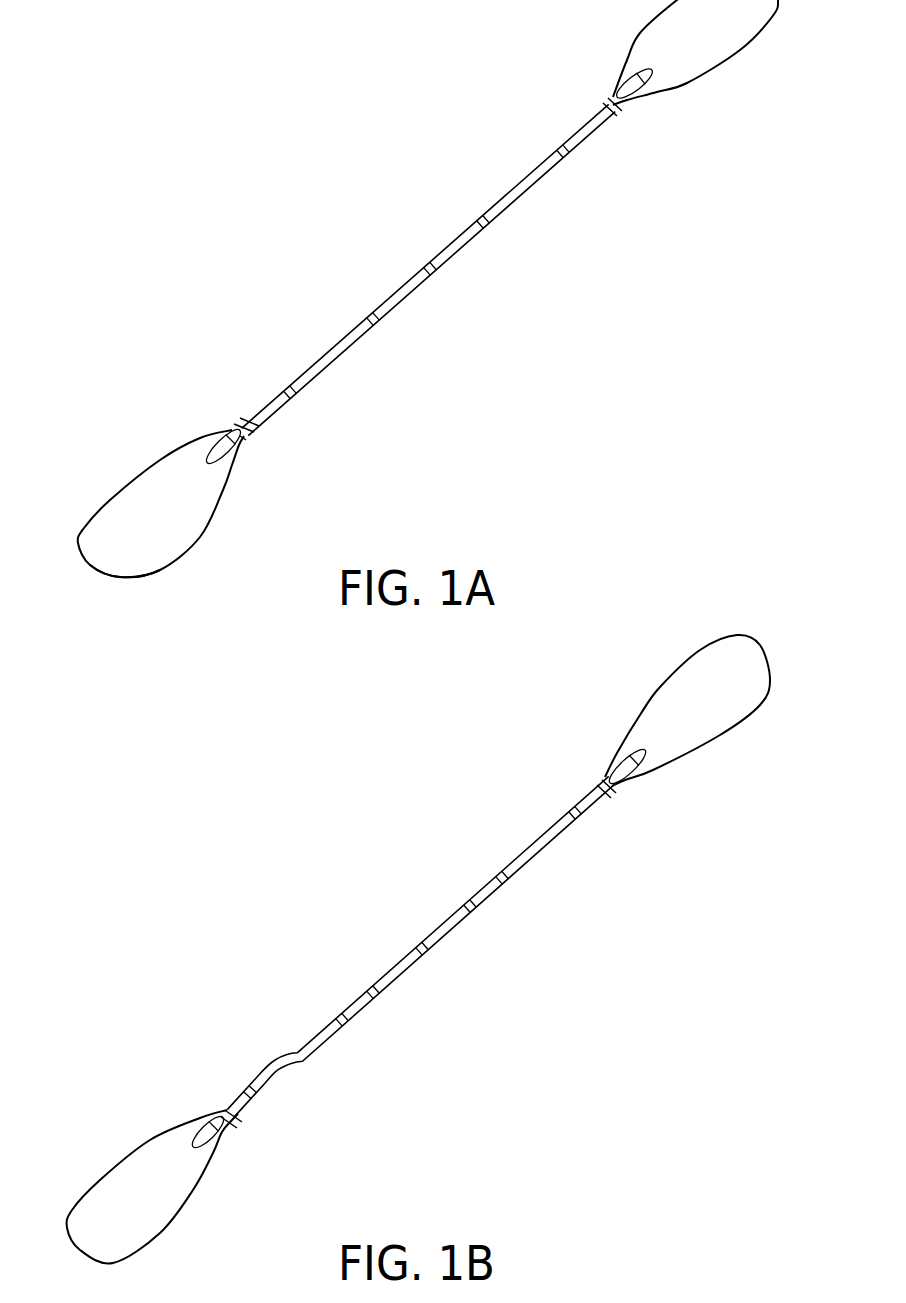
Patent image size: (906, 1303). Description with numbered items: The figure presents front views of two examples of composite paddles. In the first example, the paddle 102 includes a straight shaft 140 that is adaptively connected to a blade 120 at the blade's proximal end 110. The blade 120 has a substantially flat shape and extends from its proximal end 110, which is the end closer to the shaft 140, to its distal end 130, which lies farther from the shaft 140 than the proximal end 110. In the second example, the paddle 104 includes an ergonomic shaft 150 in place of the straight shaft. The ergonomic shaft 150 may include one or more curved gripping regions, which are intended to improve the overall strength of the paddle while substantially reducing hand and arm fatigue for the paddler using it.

In FIG. 1A, the paddle 102 is at (366, 172).
In FIG. 1B, the paddle 104 is at (394, 848).
In FIG. 1A, the proximal end 110 is at (241, 430).
In FIG. 1A, the blade 120 is at (110, 493).
In FIG. 1A, the distal end 130 is at (120, 578).
In FIG. 1A, the straight shaft 140 is at (350, 328).
In FIG. 1B, the ergonomic shaft 150 is at (273, 1070).